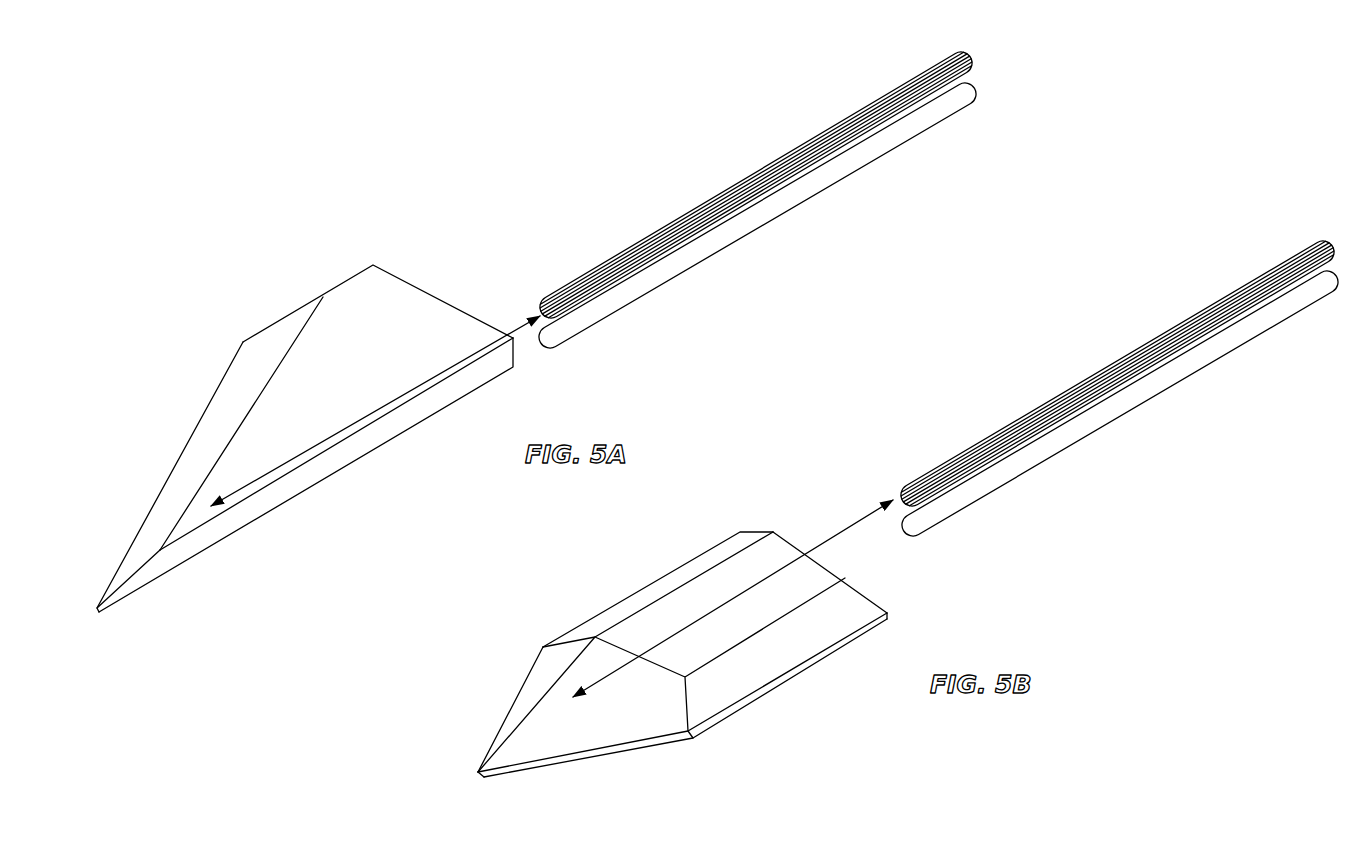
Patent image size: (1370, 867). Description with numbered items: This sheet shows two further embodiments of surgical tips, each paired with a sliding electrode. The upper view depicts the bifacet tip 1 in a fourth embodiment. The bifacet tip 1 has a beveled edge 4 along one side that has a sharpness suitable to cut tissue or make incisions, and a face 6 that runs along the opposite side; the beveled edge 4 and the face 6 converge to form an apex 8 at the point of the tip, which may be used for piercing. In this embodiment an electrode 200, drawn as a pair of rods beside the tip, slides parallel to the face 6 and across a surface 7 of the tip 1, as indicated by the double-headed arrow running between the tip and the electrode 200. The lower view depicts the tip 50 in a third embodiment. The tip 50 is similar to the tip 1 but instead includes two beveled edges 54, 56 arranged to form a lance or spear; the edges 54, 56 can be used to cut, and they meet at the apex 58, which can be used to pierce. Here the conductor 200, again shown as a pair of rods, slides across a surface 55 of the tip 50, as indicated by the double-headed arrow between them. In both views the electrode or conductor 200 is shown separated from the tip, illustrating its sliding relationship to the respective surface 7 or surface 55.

In FIG. 5A, the bifacet tip 1 is at (217, 323).
In FIG. 5A, the beveled edge 4 is at (133, 543).
In FIG. 5A, the face 6 is at (350, 463).
In FIG. 5A, the surface 7 is at (432, 305).
In FIG. 5A, the apex 8 is at (100, 615).
In FIG. 5A, the electrode 200 is at (713, 203).
In FIG. 5B, the electrode 200 is at (1072, 388).
In FIG. 5B, the tip 50 is at (565, 598).
In FIG. 5B, the beveled edge 54 is at (503, 723).
In FIG. 5B, the surface 55 is at (832, 568).
In FIG. 5B, the beveled edge 56 is at (585, 755).
In FIG. 5B, the apex 58 is at (478, 777).